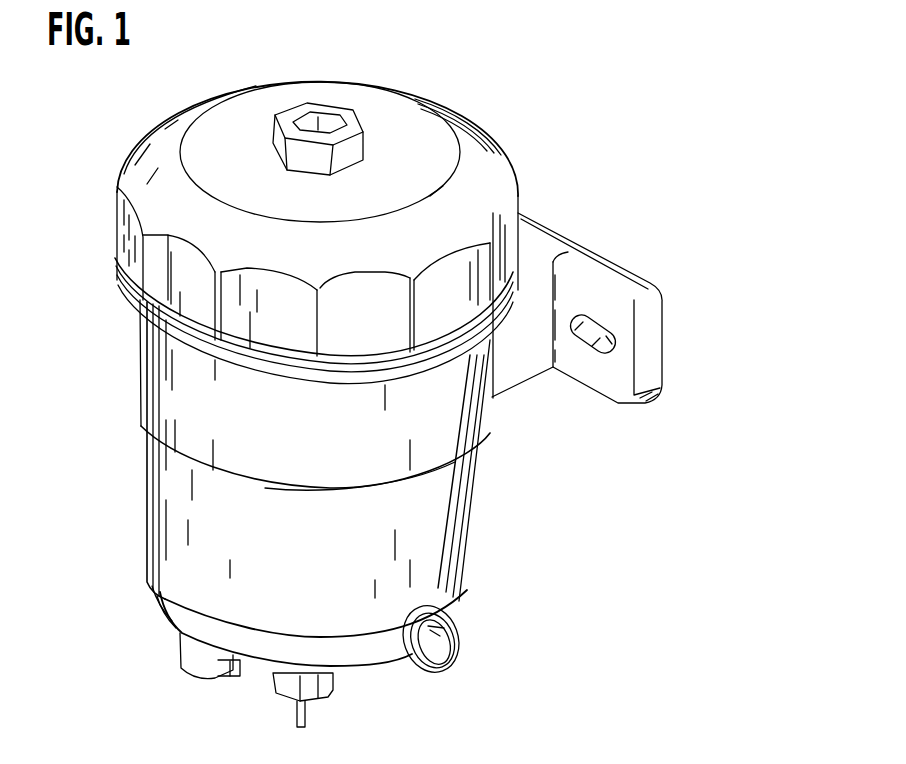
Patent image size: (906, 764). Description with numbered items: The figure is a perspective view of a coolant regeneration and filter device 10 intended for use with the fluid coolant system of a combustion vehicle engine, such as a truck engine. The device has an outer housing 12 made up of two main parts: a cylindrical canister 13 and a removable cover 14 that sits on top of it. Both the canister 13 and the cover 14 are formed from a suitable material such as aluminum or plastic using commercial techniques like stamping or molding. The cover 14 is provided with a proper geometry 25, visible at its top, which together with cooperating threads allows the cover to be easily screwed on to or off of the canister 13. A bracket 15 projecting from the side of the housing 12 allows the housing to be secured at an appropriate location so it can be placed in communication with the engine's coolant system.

The coolant regeneration and filter device 10 is at (670, 162).
The outer housing 12 is at (130, 372).
The cylindrical canister 13 is at (460, 493).
The removable cover 14 is at (424, 121).
The mounting bracket 15 is at (573, 254).
The geometry 25 is at (295, 105).